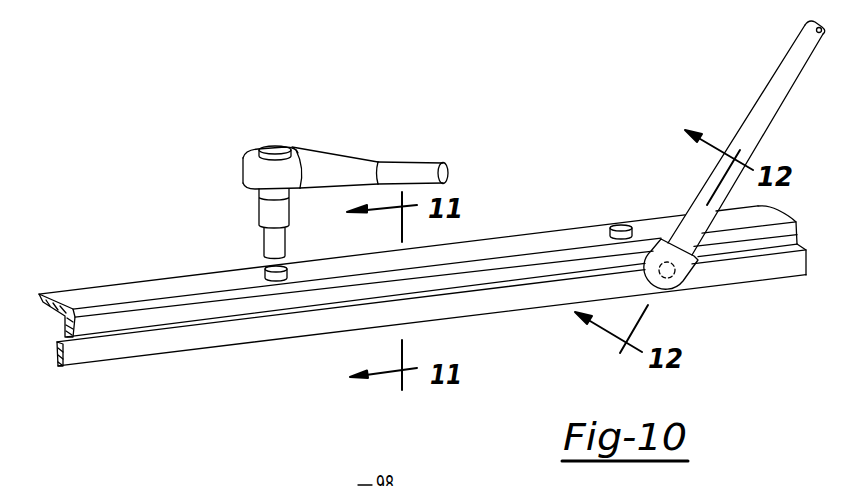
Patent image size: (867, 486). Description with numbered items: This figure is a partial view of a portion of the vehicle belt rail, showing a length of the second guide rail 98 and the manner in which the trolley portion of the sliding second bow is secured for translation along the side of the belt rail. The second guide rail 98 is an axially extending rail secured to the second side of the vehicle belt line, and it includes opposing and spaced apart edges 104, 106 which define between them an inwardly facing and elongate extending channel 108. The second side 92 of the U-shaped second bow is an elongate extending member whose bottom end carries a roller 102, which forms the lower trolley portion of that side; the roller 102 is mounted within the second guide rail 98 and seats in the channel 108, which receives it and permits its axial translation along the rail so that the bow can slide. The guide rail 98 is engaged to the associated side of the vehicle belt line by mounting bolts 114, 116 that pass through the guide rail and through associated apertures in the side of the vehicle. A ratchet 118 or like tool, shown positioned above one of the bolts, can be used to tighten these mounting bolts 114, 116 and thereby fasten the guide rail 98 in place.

The second side 92 is at (750, 113).
The second guide rail 98 is at (469, 238).
The roller 102 is at (678, 278).
The edge 104 is at (204, 318).
The edge 106 is at (496, 273).
The channel 108 is at (537, 273).
The mounting bolt 114 is at (264, 268).
The mounting bolt 116 is at (625, 226).
The ratchet 118 is at (335, 161).